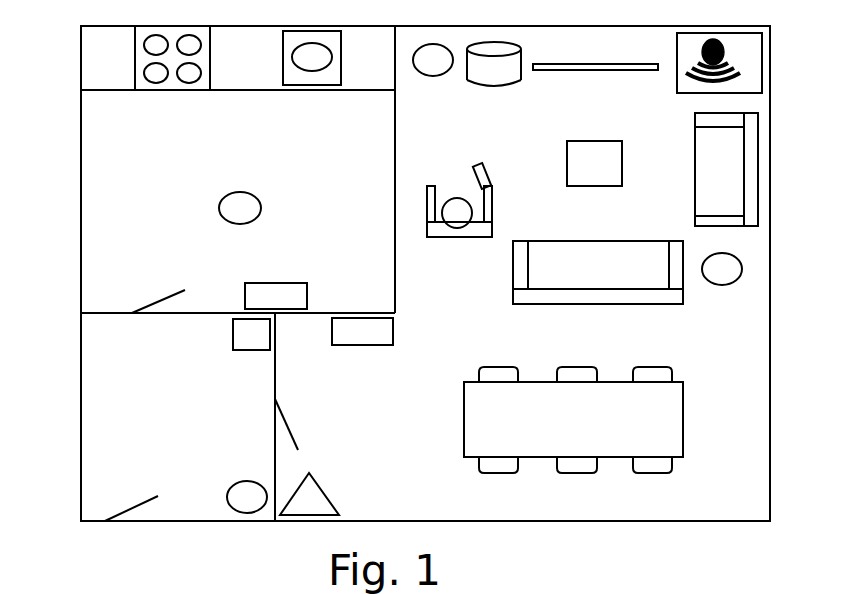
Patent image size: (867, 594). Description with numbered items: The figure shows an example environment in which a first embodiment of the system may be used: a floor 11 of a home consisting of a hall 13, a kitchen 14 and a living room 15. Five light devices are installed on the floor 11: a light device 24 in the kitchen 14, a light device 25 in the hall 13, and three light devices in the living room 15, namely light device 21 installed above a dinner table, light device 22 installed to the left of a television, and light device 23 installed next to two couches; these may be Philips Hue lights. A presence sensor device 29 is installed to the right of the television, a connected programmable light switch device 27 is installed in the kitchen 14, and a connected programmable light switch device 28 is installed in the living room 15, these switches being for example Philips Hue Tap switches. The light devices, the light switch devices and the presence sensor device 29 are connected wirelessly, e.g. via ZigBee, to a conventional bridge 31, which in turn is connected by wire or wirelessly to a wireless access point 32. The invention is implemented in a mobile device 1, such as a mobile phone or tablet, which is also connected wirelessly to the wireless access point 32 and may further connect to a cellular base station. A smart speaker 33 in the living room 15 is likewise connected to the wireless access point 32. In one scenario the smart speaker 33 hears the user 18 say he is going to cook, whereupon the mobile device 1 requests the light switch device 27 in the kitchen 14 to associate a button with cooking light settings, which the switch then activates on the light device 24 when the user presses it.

The mobile device 1 is at (476, 174).
The floor 11 is at (80, 107).
The hall 13 is at (110, 343).
The kitchen 14 is at (382, 304).
The living room 15 is at (754, 512).
The user 18 is at (440, 238).
The light device 21 is at (573, 420).
The light device 22 is at (433, 60).
The light device 23 is at (722, 269).
The light device 24 is at (240, 208).
The light device 25 is at (247, 497).
The connected programmable light switch device 27 is at (276, 296).
The connected programmable light switch device 28 is at (362, 331).
The presence sensor device 29 is at (719, 63).
The bridge 31 is at (309, 495).
The wireless access point 32 is at (251, 334).
The smart speaker 33 is at (494, 64).